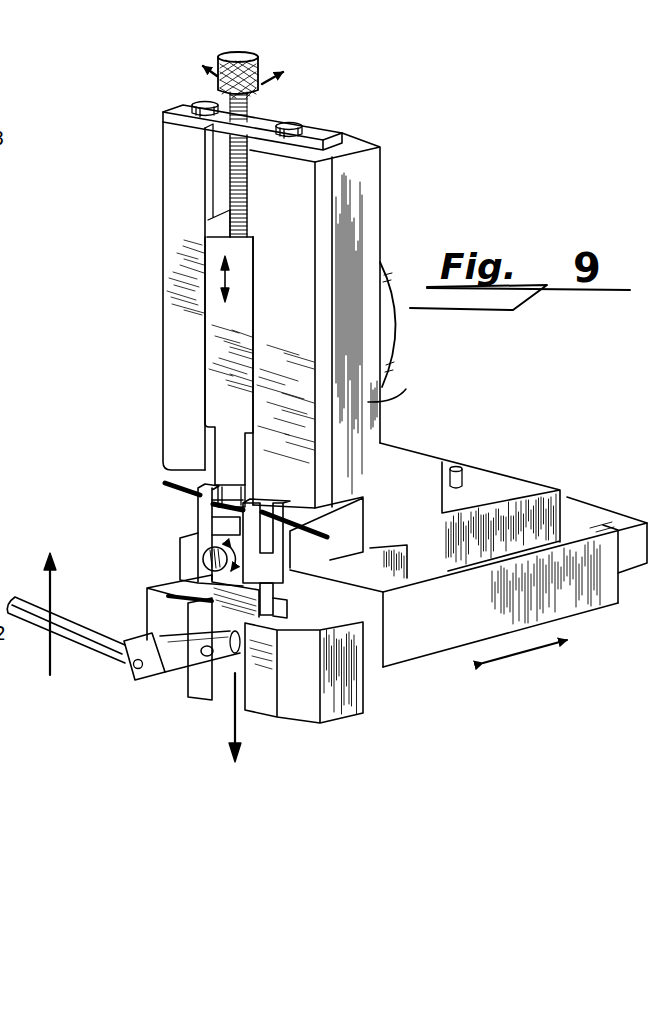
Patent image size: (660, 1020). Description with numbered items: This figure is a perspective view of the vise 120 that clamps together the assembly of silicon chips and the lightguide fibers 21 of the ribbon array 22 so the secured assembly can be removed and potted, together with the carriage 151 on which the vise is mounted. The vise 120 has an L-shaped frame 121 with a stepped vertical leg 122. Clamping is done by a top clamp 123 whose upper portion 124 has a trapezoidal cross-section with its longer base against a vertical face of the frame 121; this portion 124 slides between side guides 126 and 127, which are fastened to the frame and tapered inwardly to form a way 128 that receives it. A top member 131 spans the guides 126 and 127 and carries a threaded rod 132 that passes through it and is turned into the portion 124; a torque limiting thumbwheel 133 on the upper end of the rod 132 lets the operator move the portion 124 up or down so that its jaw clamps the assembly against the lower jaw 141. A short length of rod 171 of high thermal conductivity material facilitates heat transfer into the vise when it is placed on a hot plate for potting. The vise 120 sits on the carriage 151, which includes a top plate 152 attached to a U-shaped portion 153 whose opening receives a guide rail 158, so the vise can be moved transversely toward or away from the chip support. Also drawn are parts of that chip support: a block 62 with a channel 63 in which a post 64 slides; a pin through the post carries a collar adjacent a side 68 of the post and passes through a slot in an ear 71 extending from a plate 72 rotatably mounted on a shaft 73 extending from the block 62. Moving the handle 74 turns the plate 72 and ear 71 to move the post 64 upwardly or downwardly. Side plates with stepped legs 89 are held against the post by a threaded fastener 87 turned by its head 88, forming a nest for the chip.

The torque limiting thumbwheel 133 is at (265, 64).
The way 128 is at (210, 152).
The top member 131 is at (347, 136).
The stepped vertical leg 122 is at (373, 177).
The side guide 127 is at (297, 216).
The side guide 126 is at (180, 160).
The threaded rod 132 is at (232, 187).
The upper portion of top clamp 124 is at (212, 388).
The top clamp 123 is at (225, 487).
The rod 171 is at (395, 337).
The L-shaped frame 121 is at (375, 398).
The vise 120 is at (530, 478).
The carriage 151 is at (583, 520).
The guide rail 158 is at (628, 520).
The top plate 152 is at (477, 572).
The U-shaped portion 153 is at (460, 637).
The lightguide fibers 21 is at (327, 522).
The array 22 is at (172, 489).
The legs 89 is at (200, 507).
The lower jaw 141 is at (217, 521).
The head 88 is at (202, 543).
The threaded fastener 87 is at (206, 560).
The post 64 is at (265, 597).
The channel 63 is at (277, 613).
The side of the post 68 is at (188, 604).
The handle 74 is at (78, 637).
The shaft 73 is at (130, 671).
The plate 72 is at (152, 670).
The ear 71 is at (192, 657).
The block 62 is at (298, 712).